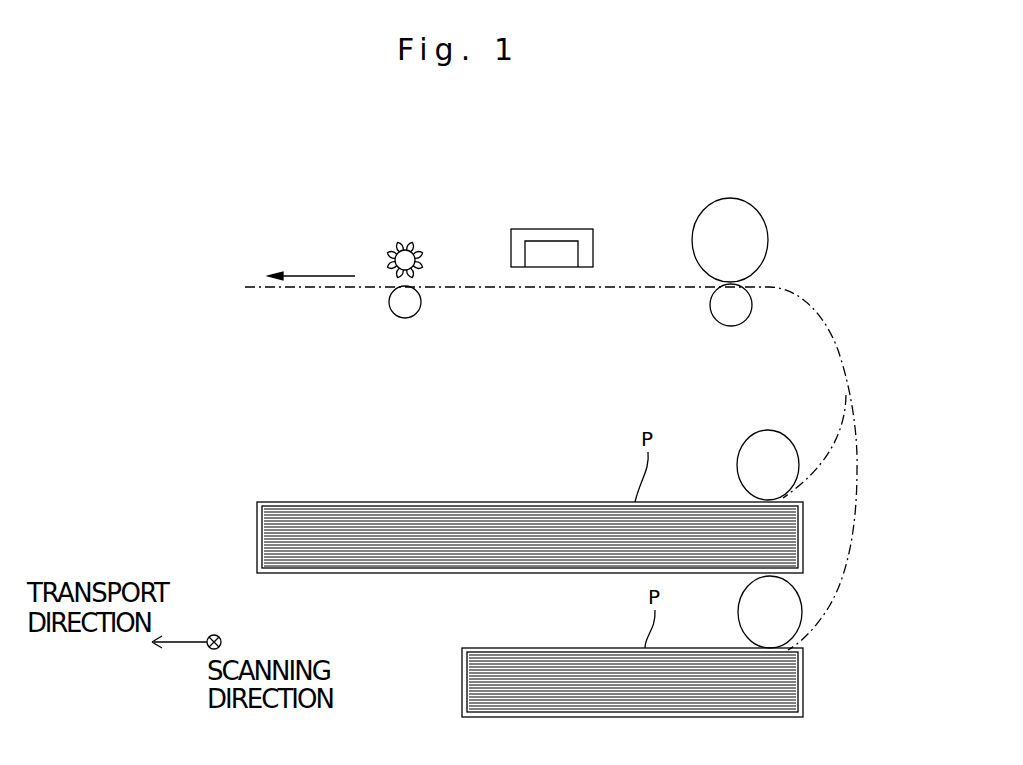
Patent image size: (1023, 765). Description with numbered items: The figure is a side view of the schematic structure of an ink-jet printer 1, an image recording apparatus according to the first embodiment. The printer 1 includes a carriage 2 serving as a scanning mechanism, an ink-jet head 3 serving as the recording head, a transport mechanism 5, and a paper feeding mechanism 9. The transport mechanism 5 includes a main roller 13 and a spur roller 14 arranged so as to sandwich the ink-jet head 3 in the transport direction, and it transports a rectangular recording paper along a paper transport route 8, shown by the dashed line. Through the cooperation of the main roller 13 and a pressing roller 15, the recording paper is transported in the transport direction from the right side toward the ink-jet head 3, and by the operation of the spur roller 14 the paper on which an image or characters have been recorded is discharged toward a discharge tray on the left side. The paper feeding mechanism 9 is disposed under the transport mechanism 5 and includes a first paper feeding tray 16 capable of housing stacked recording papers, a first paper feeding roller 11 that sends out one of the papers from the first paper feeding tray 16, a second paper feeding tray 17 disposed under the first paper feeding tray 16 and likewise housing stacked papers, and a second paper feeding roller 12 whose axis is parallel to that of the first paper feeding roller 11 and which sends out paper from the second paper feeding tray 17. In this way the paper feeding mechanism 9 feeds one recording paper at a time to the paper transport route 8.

The ink-jet printer 1 is at (906, 125).
The carriage 2 is at (551, 229).
The ink-jet head 3 is at (592, 255).
The transport mechanism 5 is at (819, 143).
The paper transport route 8 is at (838, 350).
The paper feeding mechanism 9 is at (921, 501).
The first paper feeding roller 11 is at (799, 465).
The second paper feeding roller 12 is at (802, 612).
The main roller 13 is at (767, 223).
The spur roller 14 is at (404, 250).
The pressing roller 15 is at (741, 324).
The first paper feeding tray 16 is at (804, 531).
The second paper feeding tray 17 is at (804, 683).